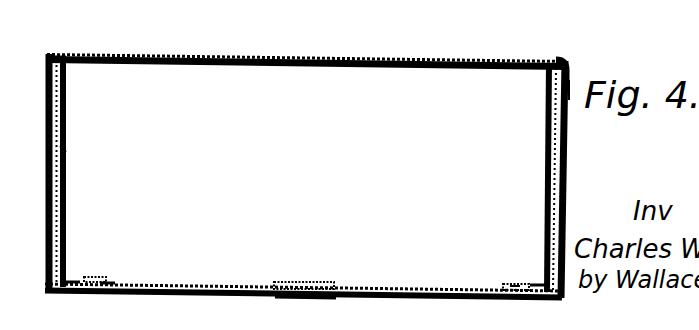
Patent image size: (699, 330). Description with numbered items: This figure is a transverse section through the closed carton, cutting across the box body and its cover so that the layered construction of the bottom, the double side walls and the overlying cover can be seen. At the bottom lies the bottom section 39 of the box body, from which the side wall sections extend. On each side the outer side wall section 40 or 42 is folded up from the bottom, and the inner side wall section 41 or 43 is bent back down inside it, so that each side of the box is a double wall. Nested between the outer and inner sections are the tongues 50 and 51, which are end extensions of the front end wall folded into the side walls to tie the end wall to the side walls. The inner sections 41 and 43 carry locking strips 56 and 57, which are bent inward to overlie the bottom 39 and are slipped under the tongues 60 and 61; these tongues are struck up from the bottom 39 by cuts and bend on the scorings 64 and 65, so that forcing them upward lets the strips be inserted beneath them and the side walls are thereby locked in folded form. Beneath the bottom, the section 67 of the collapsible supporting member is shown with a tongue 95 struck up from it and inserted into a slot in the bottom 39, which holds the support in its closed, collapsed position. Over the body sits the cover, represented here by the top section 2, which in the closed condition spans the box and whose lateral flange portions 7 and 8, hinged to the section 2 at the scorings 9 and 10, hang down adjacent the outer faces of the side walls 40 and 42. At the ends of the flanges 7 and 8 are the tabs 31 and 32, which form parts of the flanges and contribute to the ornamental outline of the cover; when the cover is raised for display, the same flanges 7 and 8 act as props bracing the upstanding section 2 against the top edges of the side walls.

The top section 2 is at (320, 58).
The flange portion 7 is at (571, 82).
The flange portion 8 is at (44, 58).
The scoring 9 is at (563, 62).
The scoring 10 is at (52, 56).
The tab 31 is at (571, 92).
The tab 32 is at (48, 84).
The bottom section 39 is at (211, 284).
The side wall section 40 is at (50, 144).
The side wall section 41 is at (70, 146).
The side wall section 42 is at (566, 157).
The side wall section 43 is at (547, 158).
The tongue 50 is at (67, 108).
The tongue 51 is at (546, 134).
The locking strip 56 is at (74, 280).
The locking strip 57 is at (540, 284).
The tongue 60 is at (98, 280).
The tongue 61 is at (514, 283).
The scoring 64 is at (108, 283).
The scoring 65 is at (505, 285).
The section of supporting member 67 is at (294, 293).
The tongue 95 is at (298, 282).